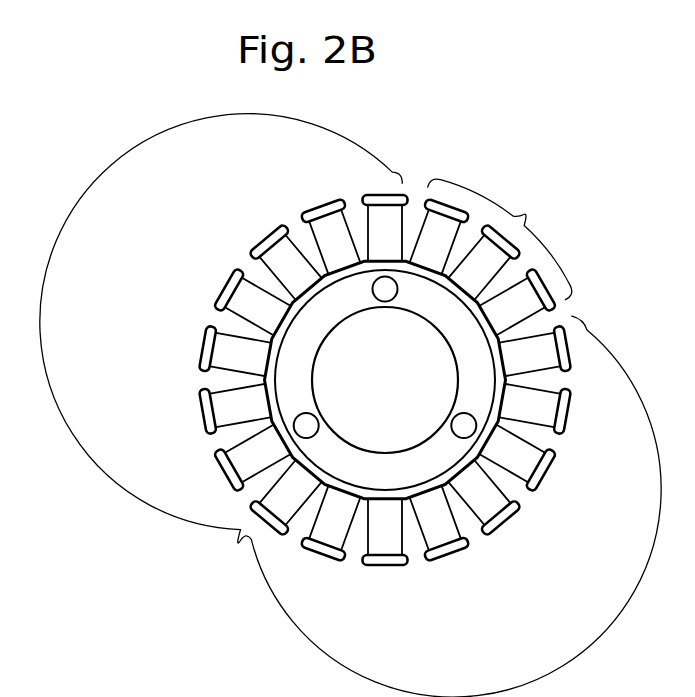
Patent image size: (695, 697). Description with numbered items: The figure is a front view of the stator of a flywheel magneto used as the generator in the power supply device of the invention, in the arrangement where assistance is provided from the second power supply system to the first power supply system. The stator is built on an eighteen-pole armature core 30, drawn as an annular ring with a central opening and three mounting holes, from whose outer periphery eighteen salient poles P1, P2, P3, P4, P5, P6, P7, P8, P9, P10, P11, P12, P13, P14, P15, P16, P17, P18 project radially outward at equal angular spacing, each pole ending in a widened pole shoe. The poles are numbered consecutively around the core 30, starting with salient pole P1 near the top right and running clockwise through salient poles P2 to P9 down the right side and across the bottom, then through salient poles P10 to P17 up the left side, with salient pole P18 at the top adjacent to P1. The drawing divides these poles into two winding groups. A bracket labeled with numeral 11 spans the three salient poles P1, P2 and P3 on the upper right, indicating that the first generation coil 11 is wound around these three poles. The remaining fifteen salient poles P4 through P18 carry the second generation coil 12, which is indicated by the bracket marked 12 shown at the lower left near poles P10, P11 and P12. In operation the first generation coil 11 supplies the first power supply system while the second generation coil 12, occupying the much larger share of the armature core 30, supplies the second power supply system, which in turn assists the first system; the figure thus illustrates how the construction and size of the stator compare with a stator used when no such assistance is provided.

The salient pole P1 is at (444, 202).
The salient pole P2 is at (506, 238).
The salient pole P3 is at (545, 276).
The salient pole P4 is at (571, 343).
The salient pole P5 is at (570, 414).
The salient pole P6 is at (551, 473).
The salient pole P7 is at (507, 523).
The salient pole P8 is at (449, 558).
The salient pole P9 is at (384, 567).
The salient pole P10 is at (323, 557).
The salient pole P11 is at (266, 526).
The salient pole P12 is at (222, 478).
The salient pole P13 is at (204, 416).
The salient pole P14 is at (203, 346).
The salient pole P15 is at (226, 288).
The salient pole P16 is at (266, 240).
The salient pole P17 is at (318, 208).
The salient pole P18 is at (378, 197).
The first generation coil 11 is at (500, 239).
The second generation coil 12 is at (213, 554).
The armature core 30 is at (456, 386).